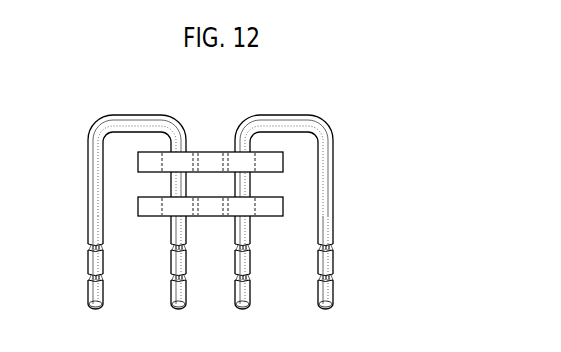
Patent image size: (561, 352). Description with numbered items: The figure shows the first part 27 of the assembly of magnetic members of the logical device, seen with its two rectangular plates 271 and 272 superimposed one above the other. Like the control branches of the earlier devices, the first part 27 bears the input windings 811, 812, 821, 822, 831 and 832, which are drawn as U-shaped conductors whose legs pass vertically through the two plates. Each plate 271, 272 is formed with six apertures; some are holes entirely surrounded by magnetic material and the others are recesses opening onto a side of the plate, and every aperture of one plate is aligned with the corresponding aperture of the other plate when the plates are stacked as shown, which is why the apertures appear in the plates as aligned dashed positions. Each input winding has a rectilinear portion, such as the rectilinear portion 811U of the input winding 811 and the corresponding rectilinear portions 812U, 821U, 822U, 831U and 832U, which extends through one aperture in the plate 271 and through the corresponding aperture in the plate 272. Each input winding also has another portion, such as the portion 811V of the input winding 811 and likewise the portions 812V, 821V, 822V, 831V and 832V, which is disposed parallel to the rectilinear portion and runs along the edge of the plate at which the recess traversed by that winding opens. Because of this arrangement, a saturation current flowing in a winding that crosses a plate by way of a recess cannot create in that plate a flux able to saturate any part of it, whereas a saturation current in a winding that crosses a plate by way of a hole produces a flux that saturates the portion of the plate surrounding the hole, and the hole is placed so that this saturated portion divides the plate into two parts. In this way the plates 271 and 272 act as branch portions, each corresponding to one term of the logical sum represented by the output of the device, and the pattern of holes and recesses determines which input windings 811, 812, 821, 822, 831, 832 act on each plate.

The first part 27 is at (233, 106).
The rectangular plate 271 is at (270, 207).
The rectangular plate 272 is at (270, 163).
The input winding 811 is at (171, 224).
The portion of input winding 811V is at (88, 217).
The rectilinear portion of input winding 811U is at (180, 221).
The input winding 812 is at (318, 223).
The rectilinear portion of input winding 812U is at (240, 237).
The portion of input winding 812V is at (333, 210).
The input winding 821 is at (171, 258).
The portion of input winding 821V is at (88, 262).
The rectilinear portion of input winding 821U is at (180, 255).
The input winding 822 is at (318, 258).
The rectilinear portion of input winding 822U is at (240, 270).
The portion of input winding 822V is at (333, 262).
The input winding 831 is at (171, 291).
The portion of input winding 831V is at (88, 294).
The rectilinear portion of input winding 831U is at (180, 287).
The input winding 832 is at (318, 291).
The rectilinear portion of input winding 832U is at (240, 300).
The portion of input winding 832V is at (333, 296).